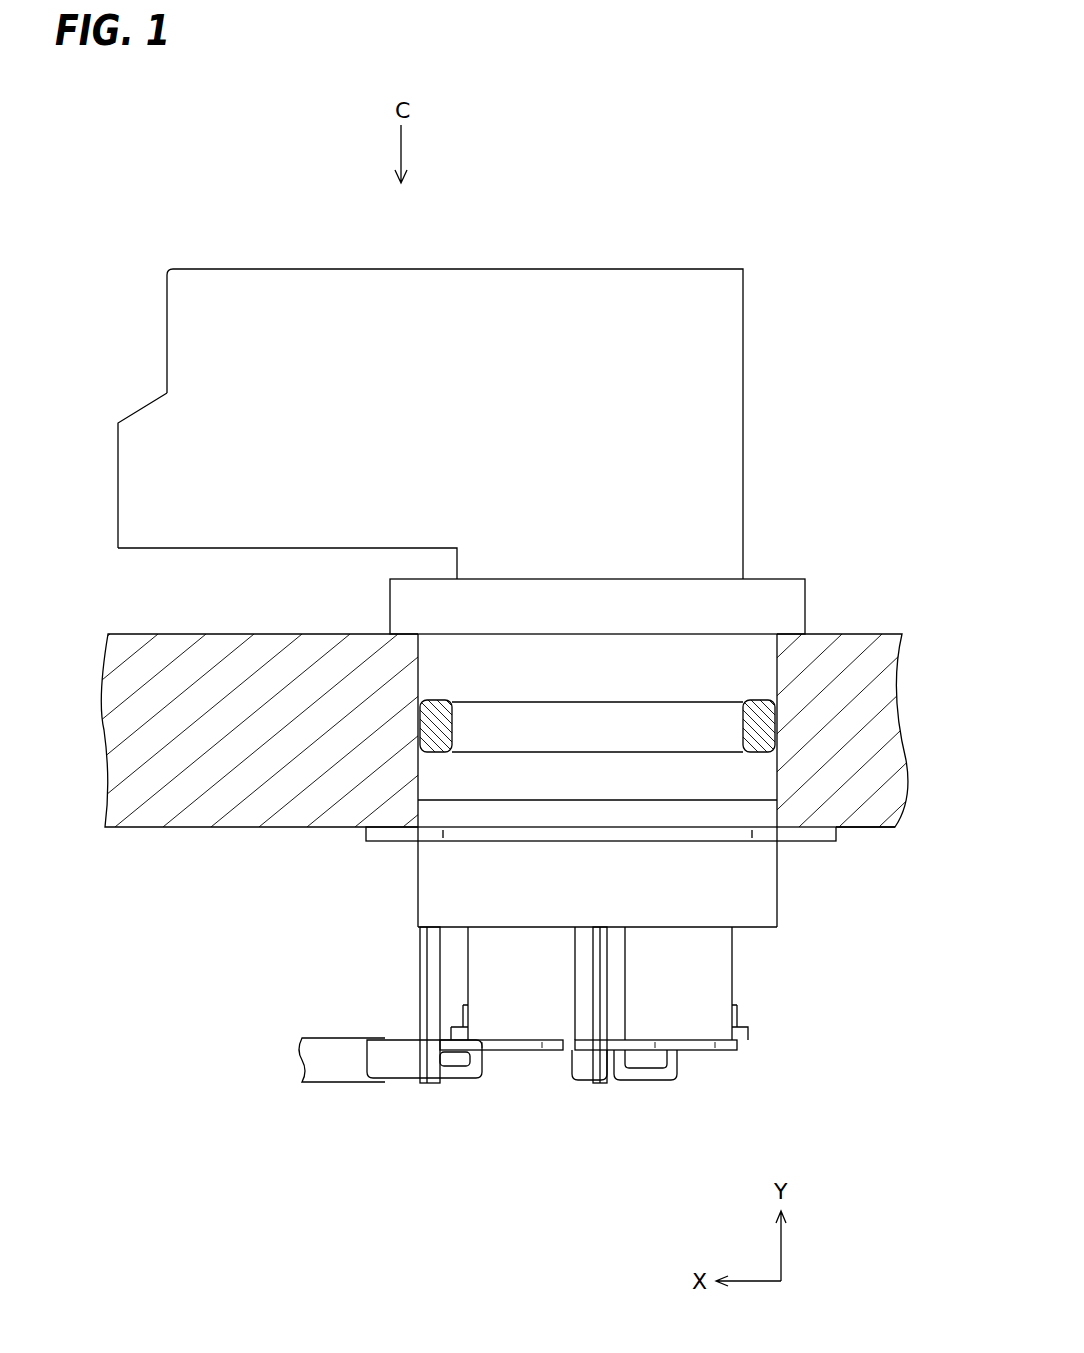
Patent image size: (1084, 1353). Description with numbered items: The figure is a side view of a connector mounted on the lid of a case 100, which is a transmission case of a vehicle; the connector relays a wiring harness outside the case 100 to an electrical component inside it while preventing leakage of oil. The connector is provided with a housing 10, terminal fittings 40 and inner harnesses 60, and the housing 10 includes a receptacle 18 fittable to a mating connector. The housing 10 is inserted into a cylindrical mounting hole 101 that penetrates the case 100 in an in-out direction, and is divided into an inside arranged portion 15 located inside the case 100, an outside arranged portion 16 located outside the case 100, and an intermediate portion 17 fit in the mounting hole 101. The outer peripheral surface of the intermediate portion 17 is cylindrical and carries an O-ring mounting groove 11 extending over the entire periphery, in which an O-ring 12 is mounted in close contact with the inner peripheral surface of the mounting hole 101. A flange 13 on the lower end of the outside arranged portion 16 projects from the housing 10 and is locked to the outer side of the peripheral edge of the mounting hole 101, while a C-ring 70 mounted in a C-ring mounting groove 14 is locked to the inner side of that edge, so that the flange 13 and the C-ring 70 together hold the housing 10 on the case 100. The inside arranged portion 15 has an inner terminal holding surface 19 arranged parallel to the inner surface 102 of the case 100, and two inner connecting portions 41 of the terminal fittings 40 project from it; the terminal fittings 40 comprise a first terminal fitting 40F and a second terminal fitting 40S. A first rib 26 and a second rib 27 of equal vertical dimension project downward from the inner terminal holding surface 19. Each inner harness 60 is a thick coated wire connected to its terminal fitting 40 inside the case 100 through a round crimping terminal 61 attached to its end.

The housing 10 is at (490, 702).
The O-ring mounting groove 11 is at (430, 717).
The O-ring 12 is at (432, 732).
The flange 13 is at (657, 593).
The C-ring mounting groove 14 is at (462, 834).
The inside arranged portion 15 is at (633, 938).
The outside arranged portion 16 is at (237, 304).
The intermediate portion 17 is at (533, 590).
The receptacle 18 is at (188, 340).
The inner terminal holding surface 19 is at (688, 928).
The first rib 26 is at (600, 950).
The second rib 27 is at (422, 1048).
The terminal fittings 40 is at (590, 1065).
The second terminal fitting 40S is at (450, 1046).
The first terminal fitting 40F is at (693, 1041).
The inner connecting portion 41 is at (715, 993).
The inner harness 60 is at (328, 1068).
The crimping terminal 61 is at (465, 1047).
The C-ring 70 is at (609, 885).
The case 100 is at (541, 699).
The mounting hole 101 is at (777, 673).
The inner surface 102 is at (873, 828).